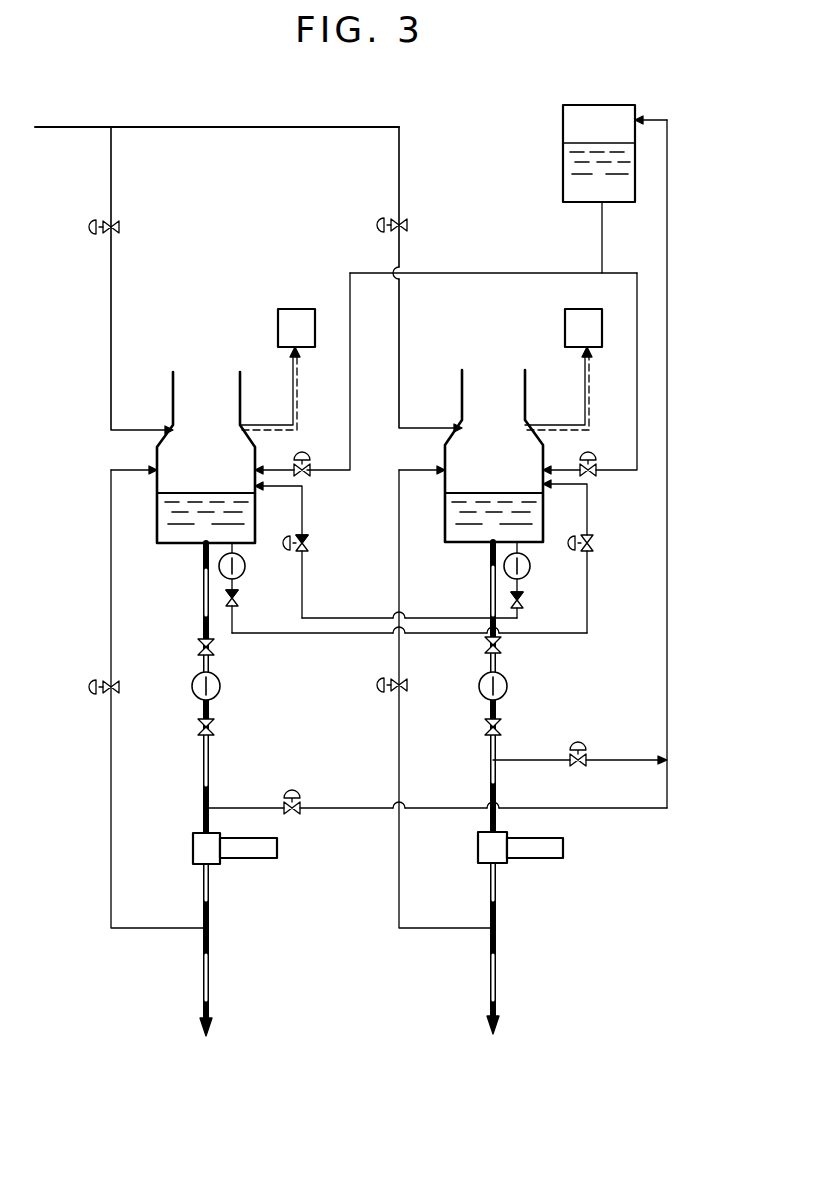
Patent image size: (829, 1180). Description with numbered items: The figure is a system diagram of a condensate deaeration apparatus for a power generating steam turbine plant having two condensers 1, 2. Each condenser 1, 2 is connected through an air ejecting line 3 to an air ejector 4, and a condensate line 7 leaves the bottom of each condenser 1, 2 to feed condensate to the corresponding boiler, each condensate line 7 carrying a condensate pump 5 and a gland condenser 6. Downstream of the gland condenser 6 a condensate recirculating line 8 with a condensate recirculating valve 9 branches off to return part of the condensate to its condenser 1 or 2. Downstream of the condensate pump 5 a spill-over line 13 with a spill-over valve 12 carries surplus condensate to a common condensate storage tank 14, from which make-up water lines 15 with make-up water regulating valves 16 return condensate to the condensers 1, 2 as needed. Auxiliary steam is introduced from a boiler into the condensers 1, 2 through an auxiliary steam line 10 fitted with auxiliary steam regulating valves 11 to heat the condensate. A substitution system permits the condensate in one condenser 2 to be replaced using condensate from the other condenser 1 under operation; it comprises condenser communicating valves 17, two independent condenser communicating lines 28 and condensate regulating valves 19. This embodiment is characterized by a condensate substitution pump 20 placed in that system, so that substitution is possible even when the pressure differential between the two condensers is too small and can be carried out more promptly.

The condenser 1 is at (462, 385).
The condenser 2 is at (173, 385).
The air ejecting line 3 is at (298, 398).
The air ejector 4 is at (278, 328).
The condensate pump 5 is at (193, 690).
The gland condenser 6 is at (193, 854).
The condensate line 7 is at (210, 975).
The condensate recirculating line 8 is at (111, 845).
The condensate recirculating valve 9 is at (101, 689).
The auxiliary steam line 10 is at (110, 127).
The auxiliary steam regulating valve 11 is at (92, 232).
The spill-over valve 12 is at (296, 796).
The spill-over line 13 is at (667, 692).
The condensate storage tank 14 is at (563, 122).
The make-up water line 15 is at (507, 273).
The make-up water regulating valve 16 is at (304, 455).
The condenser communicating valve 17 is at (239, 603).
The condensate regulating valve 19 is at (308, 546).
The condensate substitution pump 20 is at (246, 570).
The condenser communicating line 28 is at (352, 616).